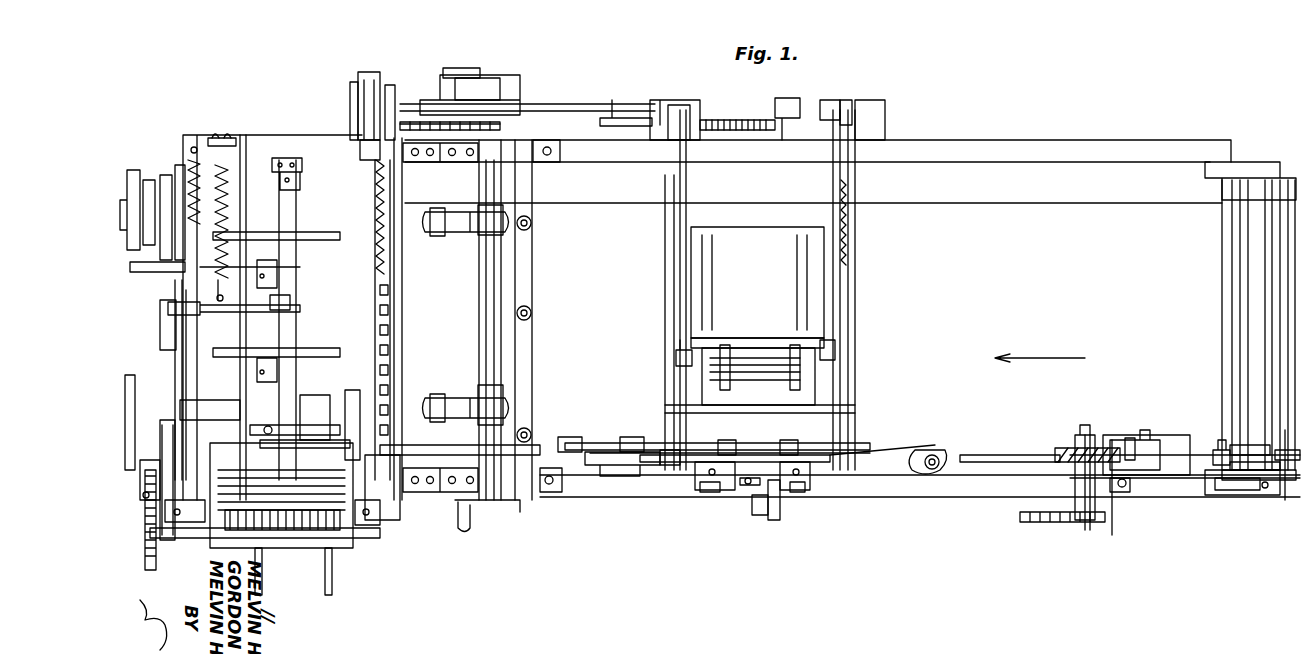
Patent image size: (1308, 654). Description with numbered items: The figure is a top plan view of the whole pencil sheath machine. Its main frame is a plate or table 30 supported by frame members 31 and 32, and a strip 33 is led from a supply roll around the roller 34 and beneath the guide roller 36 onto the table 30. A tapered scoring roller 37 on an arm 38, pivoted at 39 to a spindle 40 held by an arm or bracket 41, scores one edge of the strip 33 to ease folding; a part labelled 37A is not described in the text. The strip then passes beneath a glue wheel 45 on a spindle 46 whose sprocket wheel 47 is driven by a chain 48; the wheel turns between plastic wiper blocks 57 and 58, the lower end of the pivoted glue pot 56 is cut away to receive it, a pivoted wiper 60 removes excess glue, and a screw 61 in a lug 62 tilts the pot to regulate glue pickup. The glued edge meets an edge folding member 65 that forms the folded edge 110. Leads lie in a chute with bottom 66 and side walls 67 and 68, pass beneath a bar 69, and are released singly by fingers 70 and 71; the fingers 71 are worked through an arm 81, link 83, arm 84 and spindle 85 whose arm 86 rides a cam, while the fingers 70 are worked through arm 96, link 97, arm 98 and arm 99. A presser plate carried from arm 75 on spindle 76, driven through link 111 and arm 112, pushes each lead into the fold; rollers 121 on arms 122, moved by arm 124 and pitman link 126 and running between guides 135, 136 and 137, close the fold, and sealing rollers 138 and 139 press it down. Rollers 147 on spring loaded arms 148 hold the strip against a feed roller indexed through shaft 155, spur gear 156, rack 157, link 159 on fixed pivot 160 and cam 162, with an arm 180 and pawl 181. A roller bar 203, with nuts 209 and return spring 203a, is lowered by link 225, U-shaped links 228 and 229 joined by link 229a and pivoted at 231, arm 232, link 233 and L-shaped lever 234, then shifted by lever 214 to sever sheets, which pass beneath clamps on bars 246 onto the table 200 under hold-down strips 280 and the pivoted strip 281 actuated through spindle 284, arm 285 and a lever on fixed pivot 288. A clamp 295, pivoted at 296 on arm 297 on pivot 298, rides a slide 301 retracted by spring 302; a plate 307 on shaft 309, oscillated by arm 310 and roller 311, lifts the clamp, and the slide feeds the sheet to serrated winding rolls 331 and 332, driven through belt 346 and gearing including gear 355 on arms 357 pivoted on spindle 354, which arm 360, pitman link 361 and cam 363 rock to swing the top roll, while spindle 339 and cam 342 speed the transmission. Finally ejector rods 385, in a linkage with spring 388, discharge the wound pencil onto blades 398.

The table 30 is at (893, 462).
The frame member 31 is at (973, 498).
The frame member 32 is at (996, 150).
The strip 33 is at (622, 286).
The roller 34 is at (1287, 500).
The guide roller 36 is at (1222, 262).
The tapered scoring roller 37 is at (1255, 445).
The gear 37A is at (155, 520).
The arm 38 is at (1290, 520).
The pivot 39 is at (1217, 445).
The spindle 40 is at (1215, 495).
The arm or bracket 41 is at (1235, 495).
The glue wheel 45 is at (1057, 448).
The spindle 46 is at (1085, 425).
The sprocket wheel 47 is at (1087, 525).
The chain 48 is at (1047, 522).
The glue pot 56 is at (1161, 423).
The block 57 is at (1112, 440).
The block 58 is at (1112, 535).
The pivoted wiper 60 is at (1128, 438).
The screw 61 is at (1120, 492).
The lug 62 is at (1125, 488).
The edge folding member 65 is at (945, 450).
The chute bottom 66 is at (770, 218).
The side wall 67 is at (706, 292).
The side wall 68 is at (803, 268).
The bar 69 is at (720, 337).
The fingers 70 is at (705, 392).
The fingers 71 is at (720, 366).
The arm 75 is at (760, 432).
The spindle 76 is at (690, 466).
The arm 81 is at (676, 358).
The link 83 is at (680, 184).
The arm 84 is at (672, 100).
The spindle 85 is at (805, 103).
The arm 86 is at (696, 112).
The arm 96 is at (830, 350).
The link 97 is at (833, 182).
The arm 98 is at (845, 100).
The arm 99 is at (808, 108).
The folded edge 110 is at (600, 415).
The link 111 is at (857, 182).
The arm 112 is at (862, 102).
The rollers 121 is at (722, 444).
The arms 122 is at (718, 490).
The arm 124 is at (780, 506).
The pitman link 126 is at (757, 512).
The guide 135 is at (832, 470).
The guide 136 is at (748, 488).
The guide 137 is at (640, 460).
The sealing roller 138 is at (632, 437).
The sealing roller 139 is at (566, 437).
The rollers 147 is at (432, 232).
The arms 148 is at (480, 220).
The shaft 155 is at (480, 72).
The spur gear 156 is at (457, 80).
The rack 157 is at (552, 104).
The link 159 is at (628, 118).
The fixed pivot 160 is at (612, 104).
The cam 162 is at (745, 120).
The arm 180 is at (478, 115).
The pawl 181 is at (500, 126).
The table 200 is at (254, 140).
The bar 203 is at (380, 70).
The spring 203a is at (378, 240).
The nuts 209 is at (380, 296).
The lever 214 is at (440, 518).
The link 225 is at (392, 420).
The U-shaped link 228 is at (388, 459).
The U-shaped link 229 is at (415, 158).
The link 229a is at (378, 218).
The pivot 231 is at (360, 152).
The arm 232 is at (390, 90).
The link 233 is at (368, 72).
The L-shaped lever 234 is at (350, 100).
The bars 246 is at (280, 278).
The hold-down strips 280 is at (320, 232).
The pivoted strip 281 is at (272, 178).
The spindle 284 is at (290, 300).
The arm 285 is at (172, 312).
The fixed pivot 288 is at (192, 158).
The clamp 295 is at (340, 440).
The pivot 296 is at (280, 440).
The arm 297 is at (268, 428).
The pivot 298 is at (220, 418).
The slide 301 is at (223, 262).
The spring 302 is at (243, 135).
The plate 307 is at (186, 388).
The shaft 309 is at (176, 376).
The arm 310 is at (180, 165).
The roller 311 is at (165, 175).
The winding roll 331 is at (300, 510).
The winding roll 332 is at (312, 530).
The spindle 339 is at (140, 272).
The cam 342 is at (130, 170).
The belt 346 is at (130, 376).
The spindle 354 is at (342, 540).
The gear 355 is at (148, 510).
The arms 357 is at (200, 530).
The arm 360 is at (166, 530).
The pitman link 361 is at (160, 310).
The cam 363 is at (148, 180).
The ejecting rods 385 is at (352, 425).
The spring 388 is at (226, 208).
The blades 398 is at (328, 595).